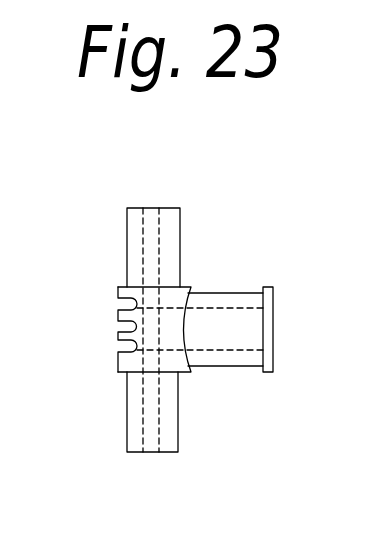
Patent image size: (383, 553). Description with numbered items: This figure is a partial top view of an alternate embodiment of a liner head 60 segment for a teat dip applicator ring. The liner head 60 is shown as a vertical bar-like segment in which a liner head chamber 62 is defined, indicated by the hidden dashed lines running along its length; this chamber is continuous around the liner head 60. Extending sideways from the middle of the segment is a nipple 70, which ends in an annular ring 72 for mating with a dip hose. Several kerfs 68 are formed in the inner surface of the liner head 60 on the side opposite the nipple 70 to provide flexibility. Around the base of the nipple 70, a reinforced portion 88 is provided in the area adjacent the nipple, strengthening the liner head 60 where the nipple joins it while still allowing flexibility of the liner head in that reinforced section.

The liner head 60 is at (168, 220).
The liner head chamber 62 is at (145, 421).
The kerfs 68 is at (133, 351).
The nipple 70 is at (225, 293).
The annular ring 72 is at (272, 287).
The reinforced portion 88 is at (179, 300).